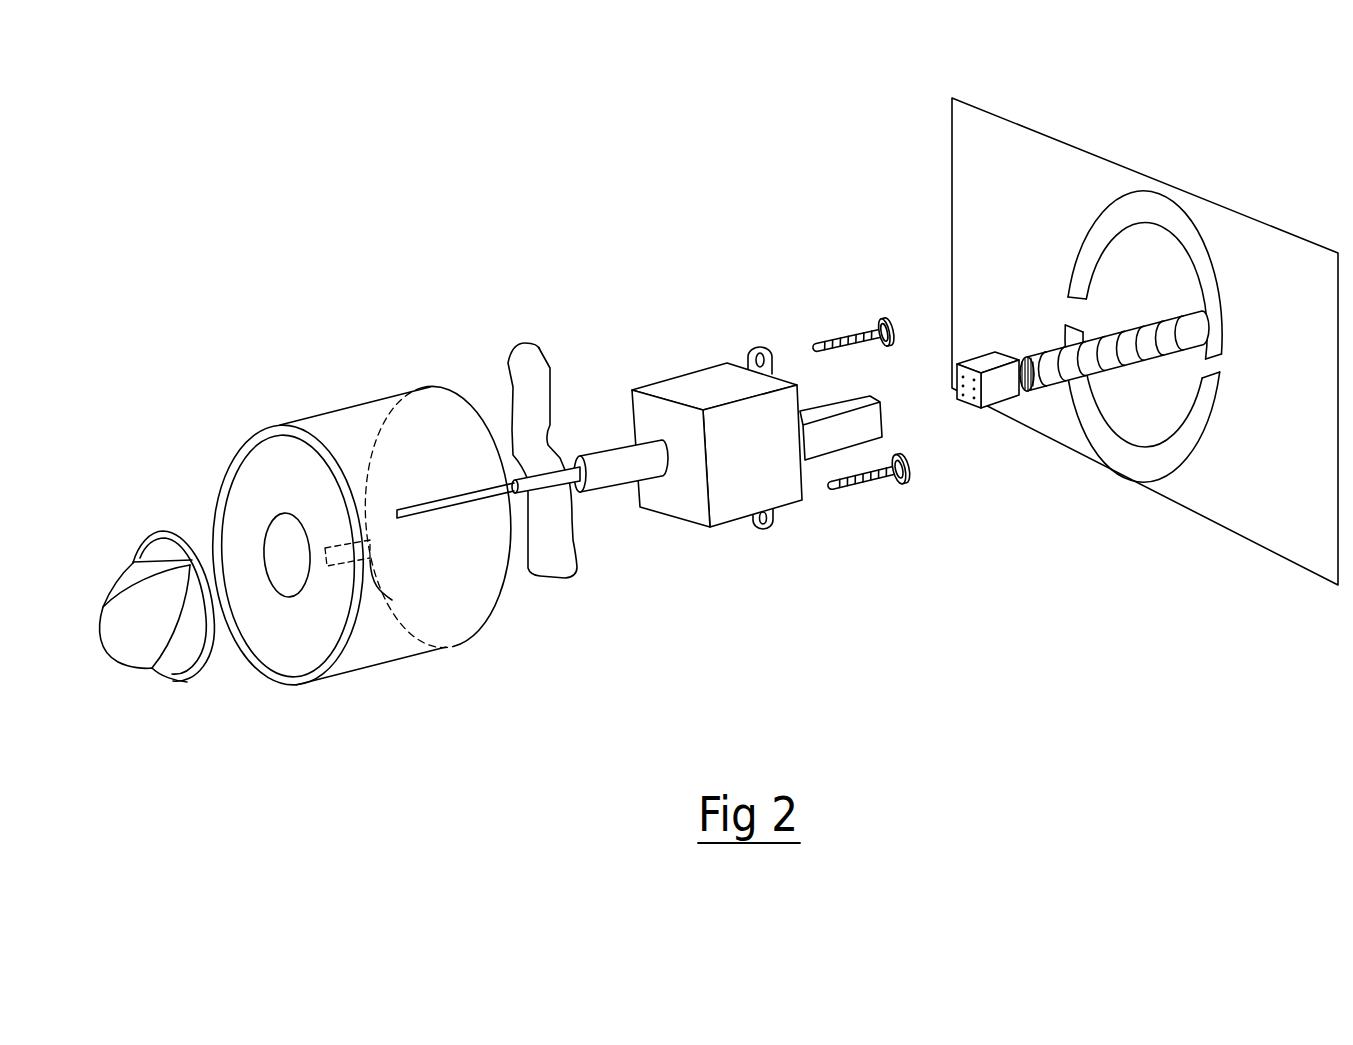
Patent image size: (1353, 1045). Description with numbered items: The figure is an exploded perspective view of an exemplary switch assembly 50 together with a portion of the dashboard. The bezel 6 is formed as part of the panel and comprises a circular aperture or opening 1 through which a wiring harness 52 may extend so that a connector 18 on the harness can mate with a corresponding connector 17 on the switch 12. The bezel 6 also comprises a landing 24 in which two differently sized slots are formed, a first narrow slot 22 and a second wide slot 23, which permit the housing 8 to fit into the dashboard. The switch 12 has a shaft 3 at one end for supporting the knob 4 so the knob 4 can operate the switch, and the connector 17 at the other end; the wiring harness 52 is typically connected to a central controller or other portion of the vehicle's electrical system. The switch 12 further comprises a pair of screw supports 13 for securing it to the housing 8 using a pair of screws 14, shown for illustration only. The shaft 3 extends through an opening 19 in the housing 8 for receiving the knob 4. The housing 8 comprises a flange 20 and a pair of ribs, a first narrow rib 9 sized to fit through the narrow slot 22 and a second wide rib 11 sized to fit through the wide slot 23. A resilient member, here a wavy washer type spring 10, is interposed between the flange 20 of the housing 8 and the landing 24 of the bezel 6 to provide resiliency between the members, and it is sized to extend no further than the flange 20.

The circular aperture 1 is at (1122, 266).
The shaft 3 is at (538, 460).
The knob 4 is at (186, 688).
The bezel 6 is at (1129, 333).
The housing 8 is at (362, 584).
The first narrow rib 9 is at (432, 500).
The wavy washer type spring 10 is at (577, 567).
The second wide rib 11 is at (392, 600).
The switch 12 is at (728, 552).
The screw supports 13 is at (750, 347).
The screws 14 is at (863, 327).
The connector 17 is at (887, 420).
The connector 18 is at (992, 424).
The opening 19 is at (278, 518).
The flange 20 is at (297, 688).
The first narrow slot 22 is at (1226, 373).
The second wide slot 23 is at (1064, 312).
The landing 24 is at (1202, 273).
The switch assembly 50 is at (638, 250).
The wiring harness 52 is at (1165, 321).